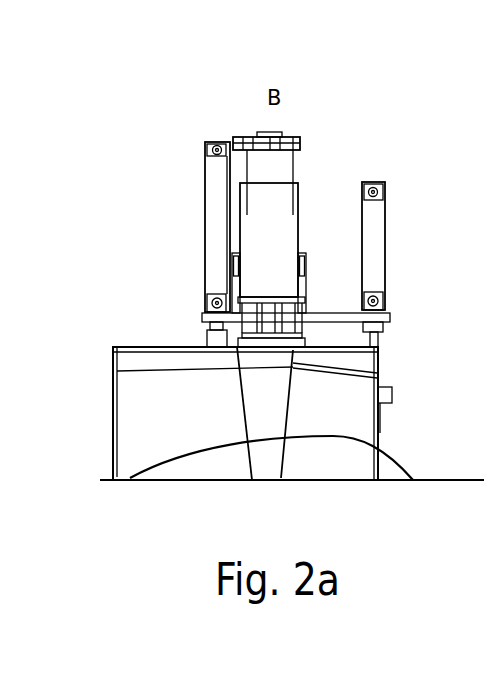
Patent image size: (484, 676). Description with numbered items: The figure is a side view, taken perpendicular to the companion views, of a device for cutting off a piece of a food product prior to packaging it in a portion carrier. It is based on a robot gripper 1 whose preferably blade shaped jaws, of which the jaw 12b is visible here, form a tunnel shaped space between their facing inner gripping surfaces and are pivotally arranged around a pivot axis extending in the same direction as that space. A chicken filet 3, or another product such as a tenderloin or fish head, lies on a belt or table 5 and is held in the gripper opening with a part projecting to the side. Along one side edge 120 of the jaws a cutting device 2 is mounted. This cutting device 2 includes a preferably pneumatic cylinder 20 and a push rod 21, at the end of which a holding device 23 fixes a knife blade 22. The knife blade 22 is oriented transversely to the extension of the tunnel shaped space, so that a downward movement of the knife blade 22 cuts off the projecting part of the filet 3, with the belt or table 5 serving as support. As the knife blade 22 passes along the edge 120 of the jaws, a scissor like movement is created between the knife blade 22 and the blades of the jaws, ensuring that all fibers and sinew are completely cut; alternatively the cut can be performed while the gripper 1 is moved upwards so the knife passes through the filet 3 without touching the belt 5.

The robot gripper 1 is at (183, 180).
The cutting device 2 is at (392, 318).
The chicken filet 3 is at (323, 460).
The belt or table 5 is at (440, 480).
The jaw 12b is at (127, 418).
The cylinder 20 is at (375, 238).
The push rod 21 is at (378, 340).
The knife blade 22 is at (382, 422).
The holding device 23 is at (396, 388).
The side edge 120 is at (380, 438).